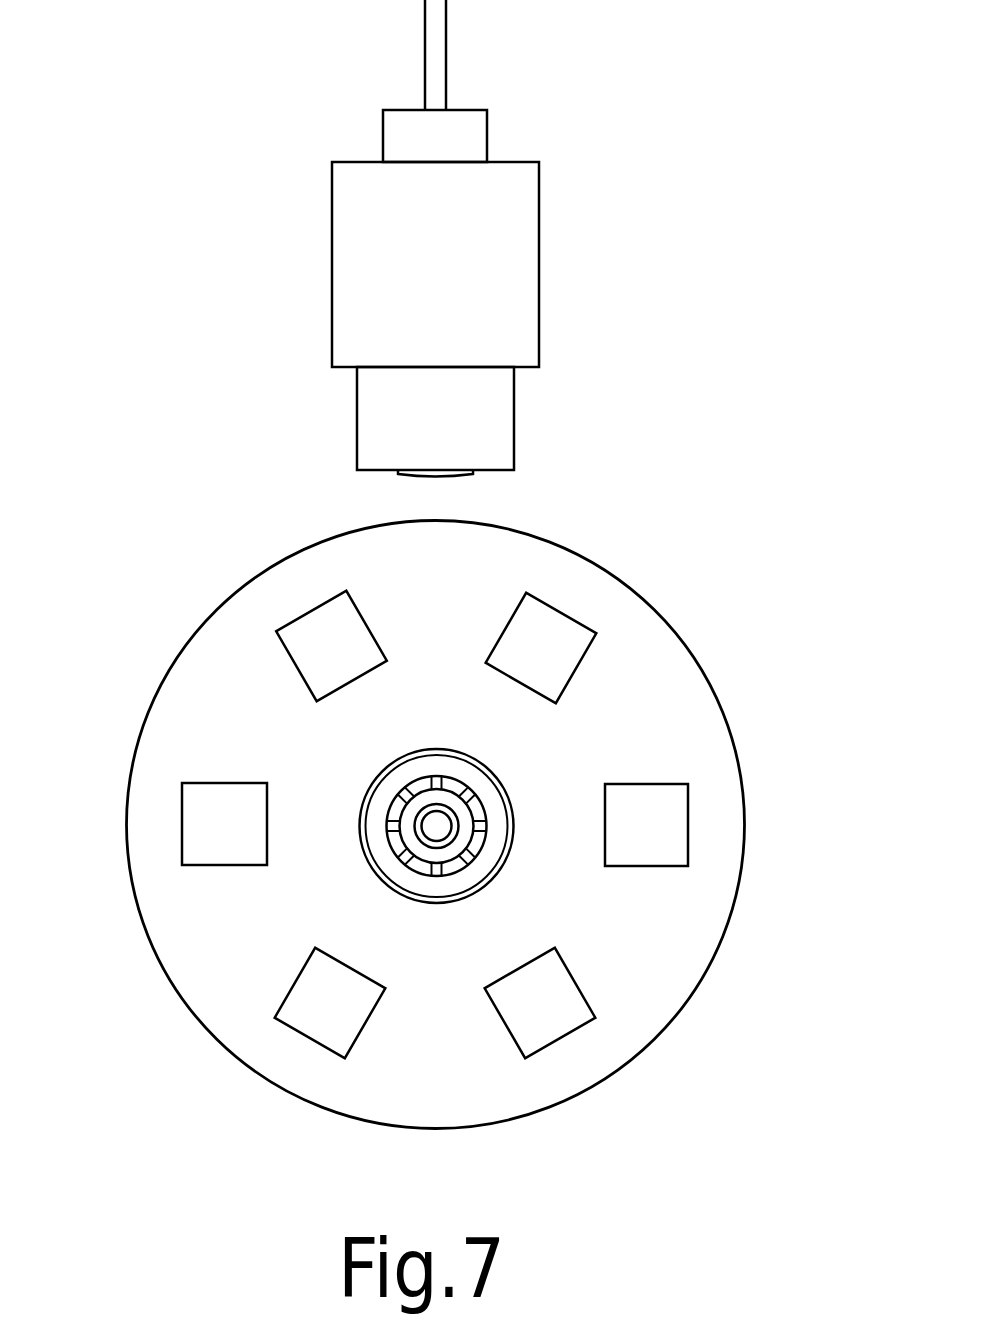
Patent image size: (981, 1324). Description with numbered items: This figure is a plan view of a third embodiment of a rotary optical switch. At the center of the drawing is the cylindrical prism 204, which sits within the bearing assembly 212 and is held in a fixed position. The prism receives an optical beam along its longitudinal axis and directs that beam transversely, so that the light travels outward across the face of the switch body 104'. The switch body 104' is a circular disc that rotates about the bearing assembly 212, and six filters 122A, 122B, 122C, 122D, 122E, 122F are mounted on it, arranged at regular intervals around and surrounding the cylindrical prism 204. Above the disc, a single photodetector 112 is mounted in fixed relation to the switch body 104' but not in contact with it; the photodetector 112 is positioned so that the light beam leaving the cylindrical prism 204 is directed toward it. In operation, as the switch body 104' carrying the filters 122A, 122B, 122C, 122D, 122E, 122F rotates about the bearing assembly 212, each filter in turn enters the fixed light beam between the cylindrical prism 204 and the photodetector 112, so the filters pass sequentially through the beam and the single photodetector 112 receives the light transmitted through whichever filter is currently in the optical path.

The switch body 104' is at (462, 825).
The photodetector 112 is at (539, 208).
The filter 122A is at (677, 840).
The filter 122B is at (572, 662).
The filter 122C is at (362, 660).
The filter 122D is at (255, 840).
The filter 122E is at (361, 1017).
The filter 122F is at (571, 1017).
The cylindrical prism 204 is at (445, 840).
The bearing assembly 212 is at (365, 855).